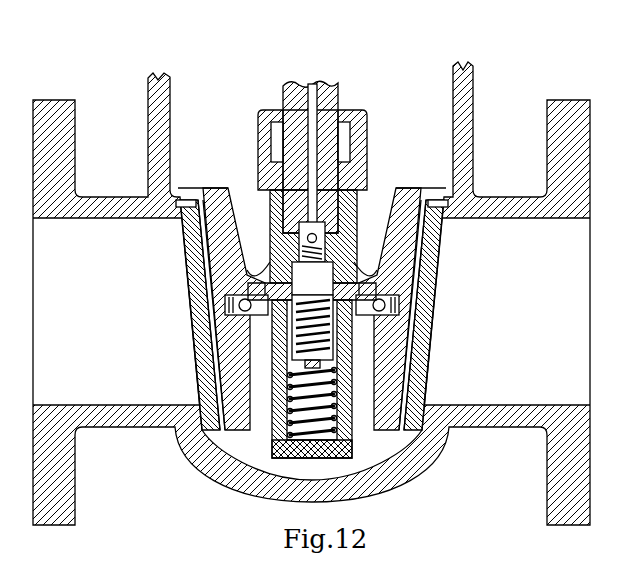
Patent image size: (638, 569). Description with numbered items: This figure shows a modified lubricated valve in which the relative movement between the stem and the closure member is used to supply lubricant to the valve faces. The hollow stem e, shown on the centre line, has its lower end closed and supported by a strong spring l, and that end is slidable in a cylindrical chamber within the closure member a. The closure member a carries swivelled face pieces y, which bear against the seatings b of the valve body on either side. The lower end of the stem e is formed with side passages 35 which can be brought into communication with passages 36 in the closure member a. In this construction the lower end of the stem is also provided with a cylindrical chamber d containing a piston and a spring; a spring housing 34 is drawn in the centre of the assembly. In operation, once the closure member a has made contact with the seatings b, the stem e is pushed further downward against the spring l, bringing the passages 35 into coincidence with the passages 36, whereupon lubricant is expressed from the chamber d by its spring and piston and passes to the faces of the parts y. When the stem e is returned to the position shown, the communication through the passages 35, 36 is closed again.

The stem e is at (332, 87).
The swivelled face pieces y is at (222, 212).
The closure member a is at (353, 211).
The seatings b is at (177, 208).
The side passages 35 is at (268, 254).
The spring housing 34 is at (312, 310).
The cylindrical chamber d is at (410, 287).
The passages 36 is at (222, 337).
The spring l is at (352, 438).